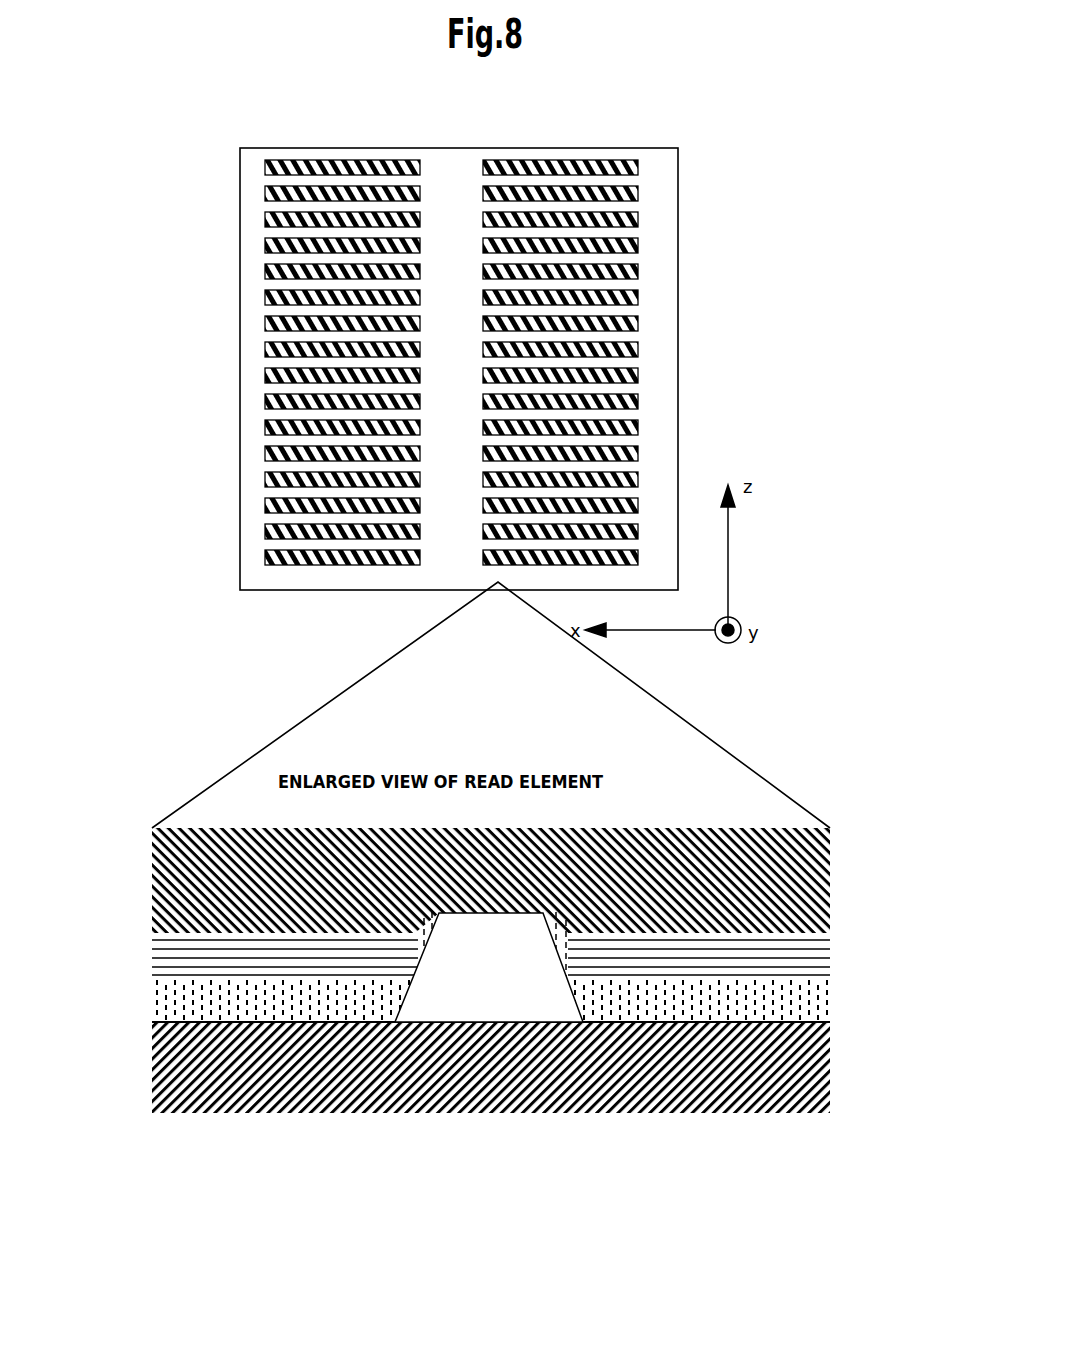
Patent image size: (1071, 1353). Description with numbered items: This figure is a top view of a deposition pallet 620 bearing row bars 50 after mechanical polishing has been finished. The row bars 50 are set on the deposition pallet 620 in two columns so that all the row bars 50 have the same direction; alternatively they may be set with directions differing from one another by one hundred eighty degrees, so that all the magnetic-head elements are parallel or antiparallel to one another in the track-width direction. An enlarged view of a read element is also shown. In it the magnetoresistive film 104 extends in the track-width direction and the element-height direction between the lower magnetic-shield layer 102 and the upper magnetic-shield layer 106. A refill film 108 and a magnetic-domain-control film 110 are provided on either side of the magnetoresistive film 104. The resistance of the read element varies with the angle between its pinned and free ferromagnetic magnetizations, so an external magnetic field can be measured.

The deposition pallet 620 is at (678, 197).
The row bars 50 is at (302, 563).
The lower magnetic-shield layer 102 is at (635, 1048).
The magnetoresistive film 104 is at (482, 972).
The upper magnetic-shield layer 106 is at (782, 903).
The refill film 108 is at (165, 997).
The magnetic-domain-control film 110 is at (800, 958).